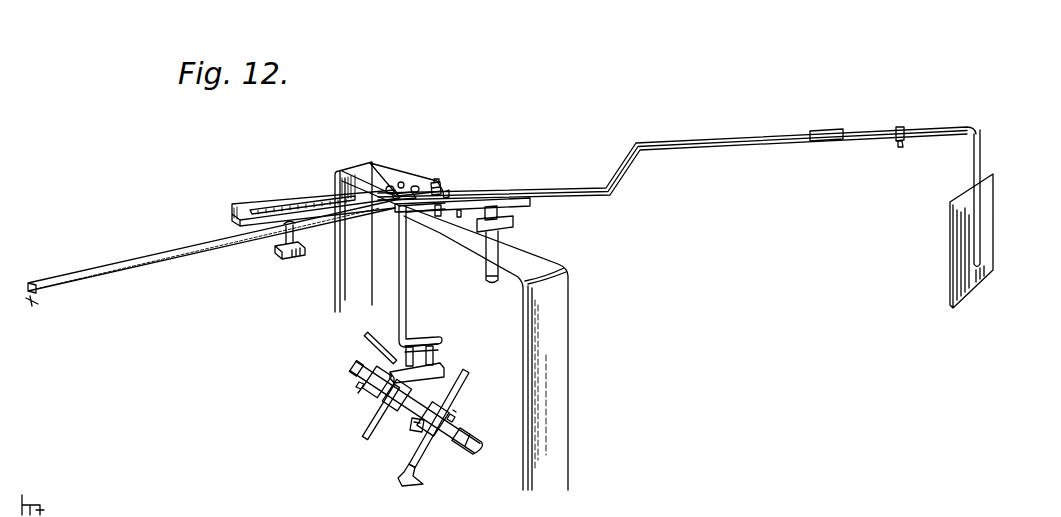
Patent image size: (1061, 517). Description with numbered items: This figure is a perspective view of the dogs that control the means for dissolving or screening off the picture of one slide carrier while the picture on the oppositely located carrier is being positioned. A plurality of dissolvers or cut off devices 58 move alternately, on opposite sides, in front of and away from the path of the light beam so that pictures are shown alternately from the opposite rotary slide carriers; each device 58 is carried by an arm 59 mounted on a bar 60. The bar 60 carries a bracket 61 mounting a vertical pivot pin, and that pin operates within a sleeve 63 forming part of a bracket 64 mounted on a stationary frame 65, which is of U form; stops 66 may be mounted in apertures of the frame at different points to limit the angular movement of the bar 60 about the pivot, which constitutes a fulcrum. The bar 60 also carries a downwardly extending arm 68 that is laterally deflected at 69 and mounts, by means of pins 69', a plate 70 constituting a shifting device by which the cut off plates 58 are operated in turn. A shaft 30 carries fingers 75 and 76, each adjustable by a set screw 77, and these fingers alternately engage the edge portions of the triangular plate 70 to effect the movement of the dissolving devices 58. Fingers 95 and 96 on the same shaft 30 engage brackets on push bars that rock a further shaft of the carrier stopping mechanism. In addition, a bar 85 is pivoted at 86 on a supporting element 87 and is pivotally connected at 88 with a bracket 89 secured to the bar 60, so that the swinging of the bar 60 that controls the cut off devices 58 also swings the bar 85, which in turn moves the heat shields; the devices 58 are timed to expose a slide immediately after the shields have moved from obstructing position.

The bar 85 is at (110, 278).
The supporting element 87 is at (263, 205).
The pivot 86 is at (280, 244).
The pivotal connection 88 is at (389, 190).
The bracket 89 is at (408, 190).
The stops 66 is at (438, 185).
The bar 60 is at (724, 144).
The arm 59 is at (978, 158).
The dissolver or cut off device 58 is at (989, 233).
The bracket 61 is at (535, 204).
The bracket 64 is at (512, 229).
The sleeve 63 is at (486, 265).
The stationary frame 65 is at (569, 277).
The downwardly extending arm 68 is at (401, 292).
The lateral deflection 69 is at (428, 333).
The pins 69' is at (449, 328).
The plate 70 is at (445, 372).
The finger 96 is at (386, 352).
The finger 75 is at (370, 430).
The finger 76 is at (462, 390).
The set screw 77 is at (412, 428).
The shaft 30 is at (478, 452).
The finger 95 is at (432, 474).